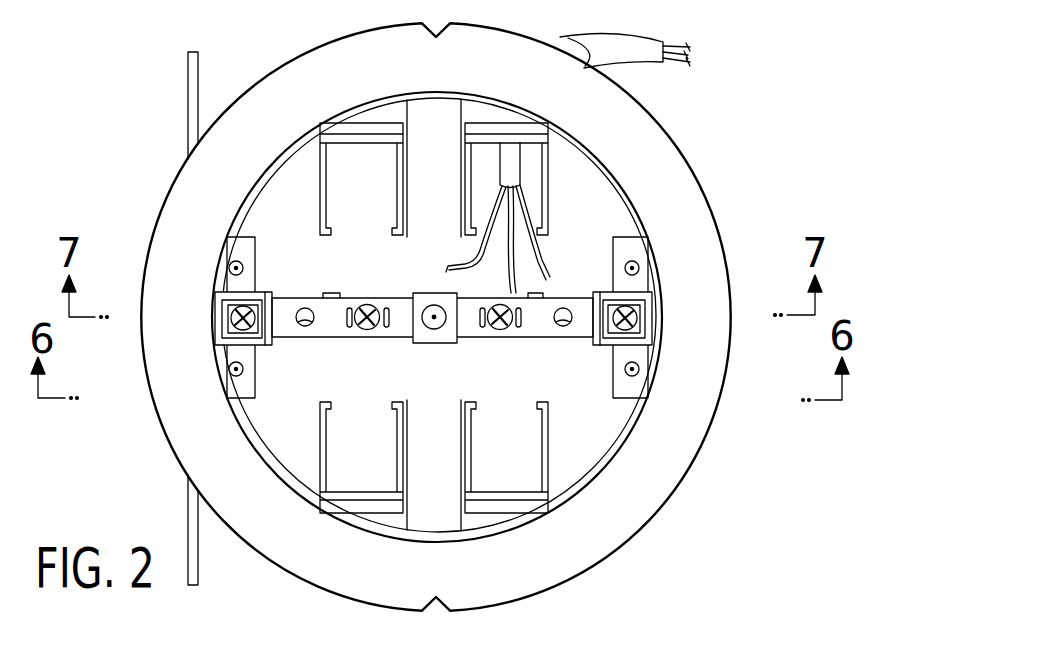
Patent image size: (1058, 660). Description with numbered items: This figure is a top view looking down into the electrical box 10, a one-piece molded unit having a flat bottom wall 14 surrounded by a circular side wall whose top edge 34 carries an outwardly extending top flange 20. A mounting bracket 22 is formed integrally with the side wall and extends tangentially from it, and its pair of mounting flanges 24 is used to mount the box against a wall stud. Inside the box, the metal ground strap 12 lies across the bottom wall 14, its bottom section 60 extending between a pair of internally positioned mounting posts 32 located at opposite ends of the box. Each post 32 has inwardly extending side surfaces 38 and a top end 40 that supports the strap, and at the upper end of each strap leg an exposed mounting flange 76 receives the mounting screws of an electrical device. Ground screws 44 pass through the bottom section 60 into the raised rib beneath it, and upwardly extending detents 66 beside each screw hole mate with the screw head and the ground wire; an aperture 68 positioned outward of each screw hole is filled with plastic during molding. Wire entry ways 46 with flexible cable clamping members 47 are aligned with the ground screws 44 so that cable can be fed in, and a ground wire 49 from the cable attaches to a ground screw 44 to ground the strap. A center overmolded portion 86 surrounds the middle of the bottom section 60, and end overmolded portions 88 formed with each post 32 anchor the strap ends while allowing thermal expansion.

The electrical box 10 is at (706, 88).
The metal ground strap 12 is at (575, 287).
The bottom wall 14 is at (613, 413).
The top flange 20 is at (682, 153).
The mounting bracket 22 is at (180, 67).
The mounting flange 24 is at (188, 118).
The mounting post 32 is at (268, 360).
The top edge 34 is at (638, 207).
The side surface 38 is at (258, 250).
The top end 40 is at (220, 335).
The ground screw 44 is at (367, 304).
The wire entry way 46 is at (352, 143).
The cable clamping member 47 is at (480, 258).
The ground wire 49 is at (503, 235).
The bottom section 60 is at (470, 328).
The detent 66 is at (386, 332).
The aperture 68 is at (305, 327).
The mounting flange 76 is at (223, 303).
The center overmolded portion 86 is at (424, 293).
The end overmolded portion 88 is at (270, 296).